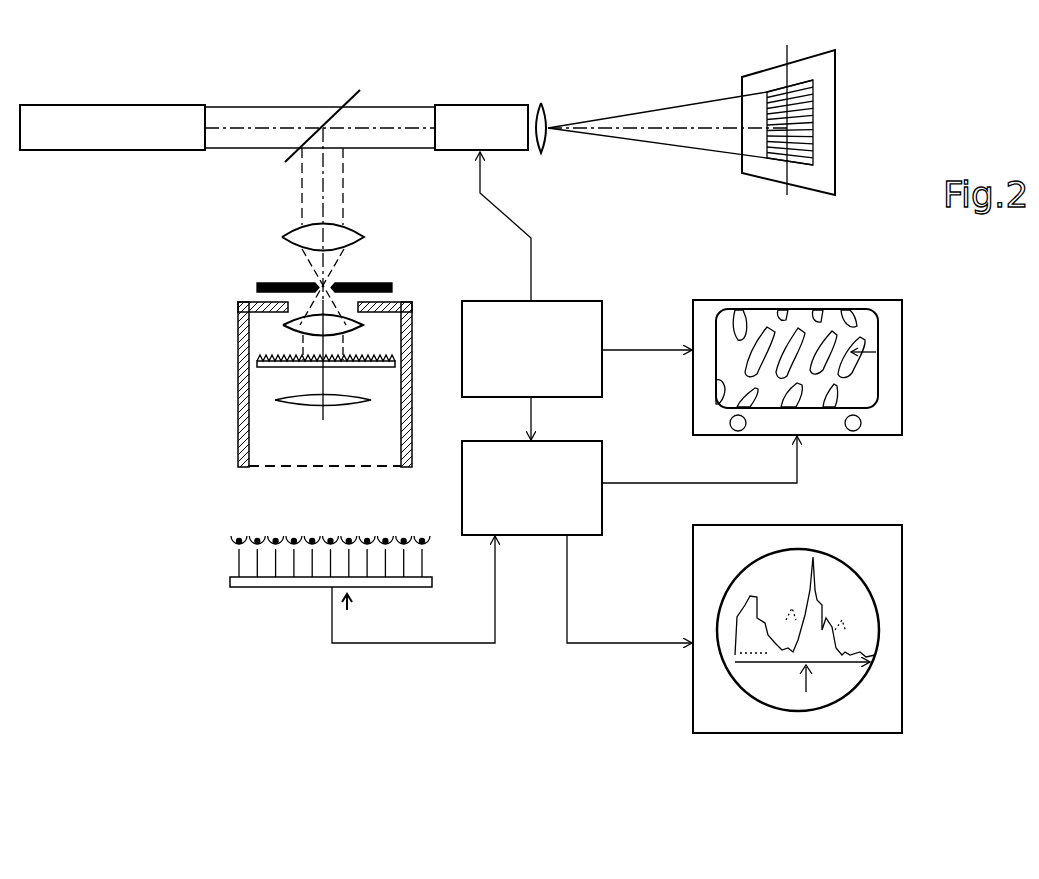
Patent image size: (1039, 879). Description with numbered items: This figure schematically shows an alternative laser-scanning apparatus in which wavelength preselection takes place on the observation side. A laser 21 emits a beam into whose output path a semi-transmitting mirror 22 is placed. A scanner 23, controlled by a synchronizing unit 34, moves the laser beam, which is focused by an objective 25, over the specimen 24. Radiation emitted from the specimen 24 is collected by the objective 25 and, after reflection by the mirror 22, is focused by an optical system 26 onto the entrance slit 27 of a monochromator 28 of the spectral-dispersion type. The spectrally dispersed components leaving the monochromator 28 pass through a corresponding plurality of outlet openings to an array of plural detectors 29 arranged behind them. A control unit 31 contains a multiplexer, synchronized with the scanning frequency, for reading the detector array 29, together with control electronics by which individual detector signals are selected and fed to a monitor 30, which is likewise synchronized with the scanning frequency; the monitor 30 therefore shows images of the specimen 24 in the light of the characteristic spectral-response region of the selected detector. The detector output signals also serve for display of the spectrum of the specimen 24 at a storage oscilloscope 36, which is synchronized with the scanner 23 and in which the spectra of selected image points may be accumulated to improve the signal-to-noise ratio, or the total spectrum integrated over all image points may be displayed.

The laser 21 is at (93, 150).
The semi-transmitting mirror 22 is at (290, 162).
The scanner 23 is at (450, 140).
The specimen 24 is at (808, 160).
The objective 25 is at (541, 153).
The optical system 26 is at (285, 240).
The entrance slit 27 is at (335, 280).
The monochromator 28 is at (238, 372).
The array of plural detectors 29 is at (232, 545).
The monitor 30 is at (748, 300).
The control unit 31 is at (522, 536).
The synchronizing unit 34 is at (562, 301).
The storage oscilloscope 36 is at (890, 688).